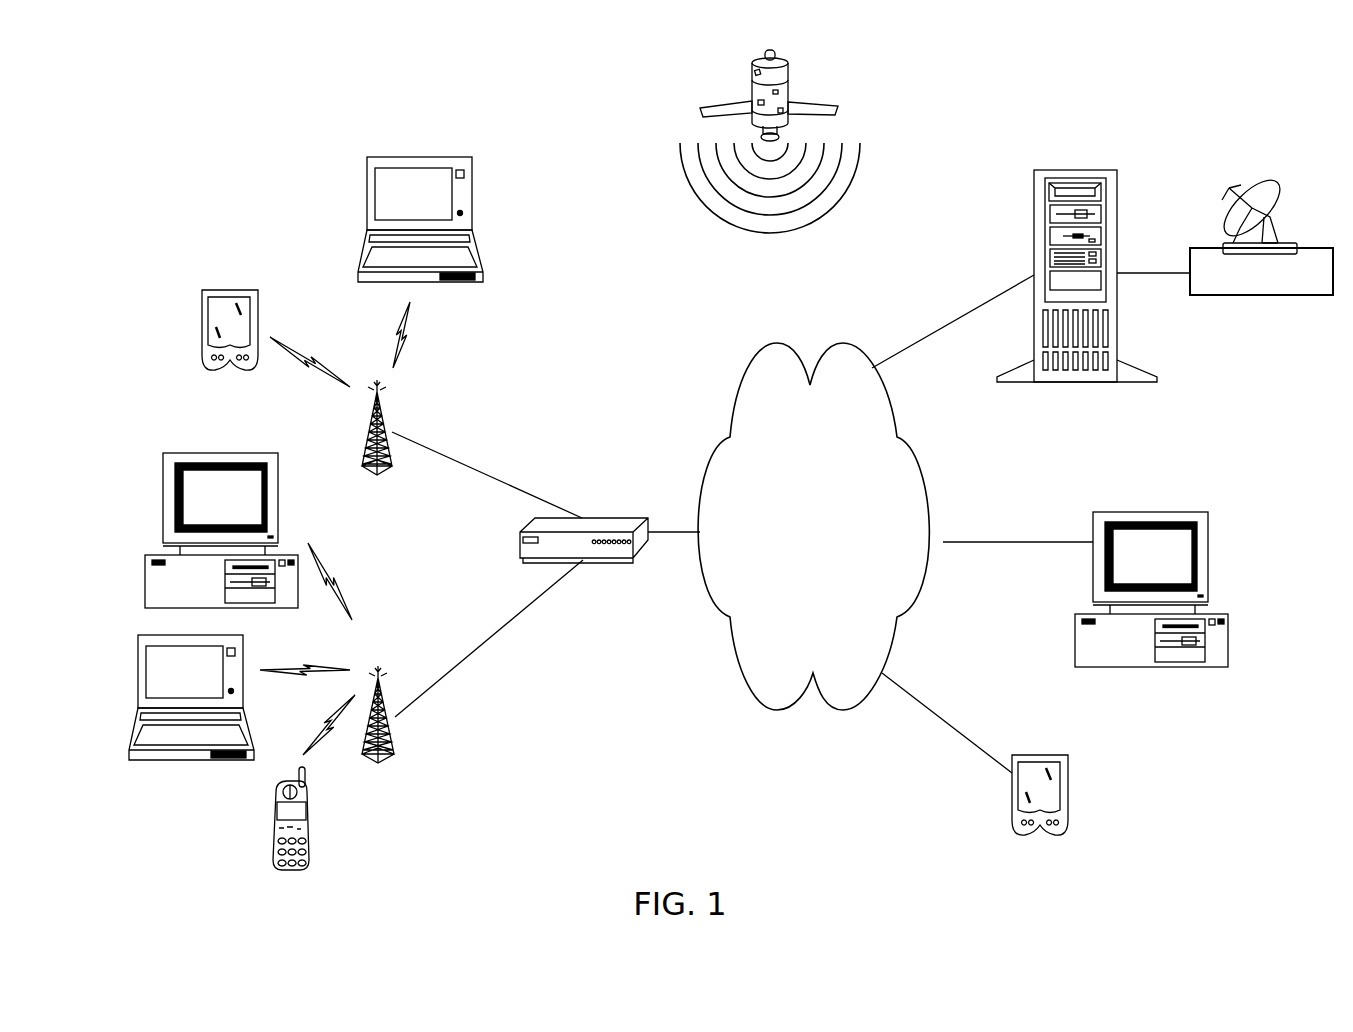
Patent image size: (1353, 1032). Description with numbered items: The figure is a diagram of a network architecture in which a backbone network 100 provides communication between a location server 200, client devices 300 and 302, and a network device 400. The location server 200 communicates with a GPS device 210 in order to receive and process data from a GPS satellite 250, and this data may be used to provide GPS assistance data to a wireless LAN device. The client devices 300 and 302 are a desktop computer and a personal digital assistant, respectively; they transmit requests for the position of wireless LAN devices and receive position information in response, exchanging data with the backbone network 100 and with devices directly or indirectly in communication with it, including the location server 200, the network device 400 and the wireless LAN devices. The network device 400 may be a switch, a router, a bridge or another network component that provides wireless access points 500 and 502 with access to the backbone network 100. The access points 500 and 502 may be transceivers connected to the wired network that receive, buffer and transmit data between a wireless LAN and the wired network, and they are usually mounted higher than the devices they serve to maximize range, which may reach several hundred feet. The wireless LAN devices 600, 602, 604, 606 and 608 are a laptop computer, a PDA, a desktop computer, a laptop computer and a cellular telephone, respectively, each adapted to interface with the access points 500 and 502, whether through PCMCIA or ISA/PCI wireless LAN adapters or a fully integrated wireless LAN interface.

The backbone network 100 is at (777, 345).
The location server 200 is at (1077, 170).
The GPS device 210 is at (1262, 295).
The GPS satellite 250 is at (815, 77).
The client device 300 is at (1167, 510).
The client device 302 is at (1063, 773).
The network device 400 is at (612, 518).
The wireless access point 500 is at (383, 385).
The wireless access point 502 is at (388, 670).
The wireless LAN device 600 is at (418, 157).
The wireless LAN device 602 is at (257, 307).
The wireless LAN device 604 is at (233, 452).
The wireless LAN device 606 is at (138, 698).
The wireless LAN device 608 is at (272, 850).